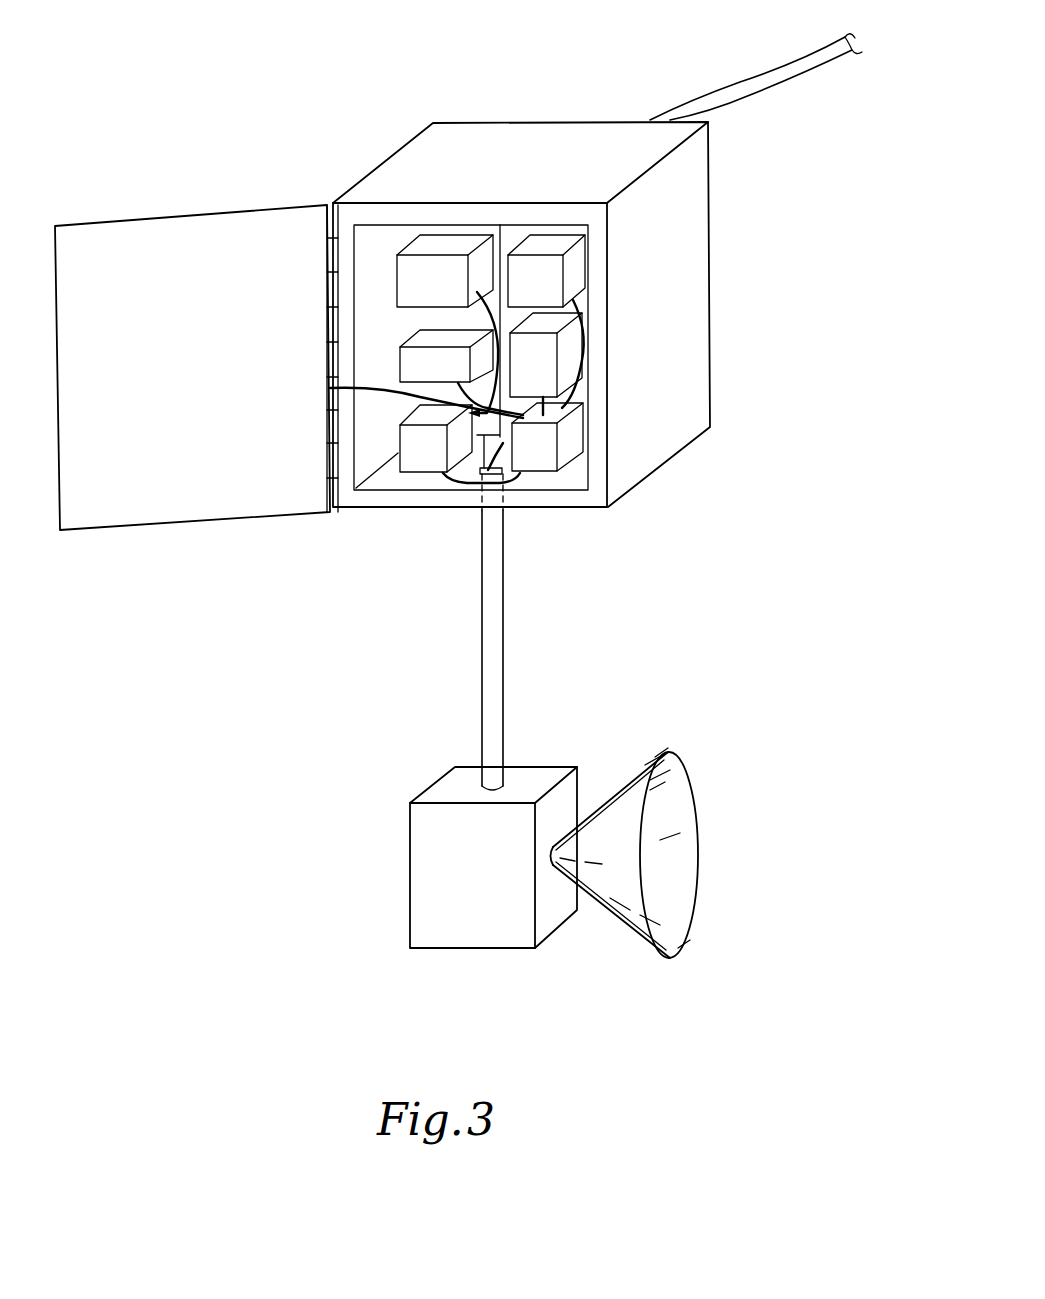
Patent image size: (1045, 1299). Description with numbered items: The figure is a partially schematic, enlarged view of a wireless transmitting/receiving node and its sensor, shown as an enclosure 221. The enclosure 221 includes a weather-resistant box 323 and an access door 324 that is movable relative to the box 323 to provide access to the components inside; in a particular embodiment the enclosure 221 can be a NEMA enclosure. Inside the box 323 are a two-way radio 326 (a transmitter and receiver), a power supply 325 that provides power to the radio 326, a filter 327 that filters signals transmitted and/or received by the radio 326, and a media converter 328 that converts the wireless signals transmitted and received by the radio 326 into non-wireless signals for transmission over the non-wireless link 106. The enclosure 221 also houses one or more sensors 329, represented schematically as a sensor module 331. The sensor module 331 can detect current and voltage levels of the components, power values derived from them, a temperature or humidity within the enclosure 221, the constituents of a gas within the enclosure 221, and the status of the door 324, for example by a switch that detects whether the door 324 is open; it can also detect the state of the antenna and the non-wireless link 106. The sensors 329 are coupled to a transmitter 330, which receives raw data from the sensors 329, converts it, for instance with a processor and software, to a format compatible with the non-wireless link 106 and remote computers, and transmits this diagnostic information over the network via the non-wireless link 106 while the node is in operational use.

The non-wireless link 106 is at (743, 82).
The enclosure 221 is at (579, 540).
The weather-resistant box 323 is at (662, 442).
The access door 324 is at (198, 213).
The power supply 325 is at (418, 247).
The two-way radio 326 is at (407, 365).
The filter 327 is at (577, 277).
The media converter 328 is at (565, 365).
The sensor 329 is at (537, 460).
The transmitter 330 is at (427, 462).
The sensor module 331 is at (570, 453).